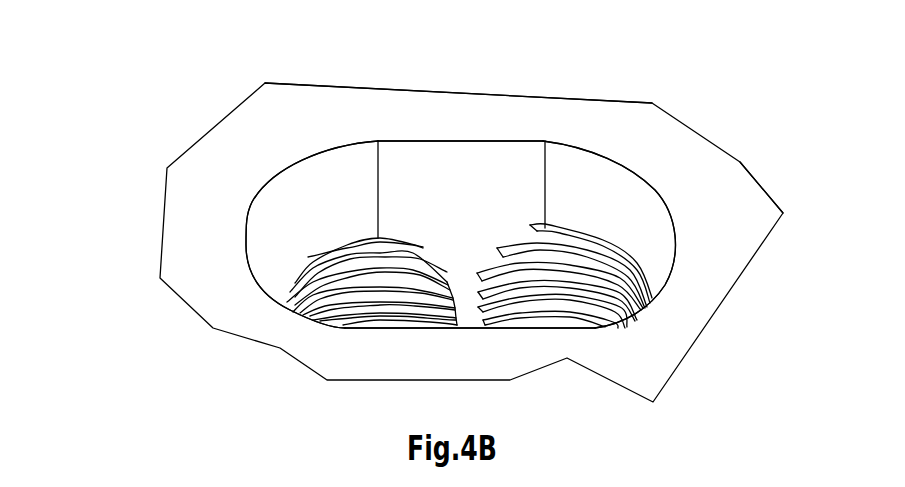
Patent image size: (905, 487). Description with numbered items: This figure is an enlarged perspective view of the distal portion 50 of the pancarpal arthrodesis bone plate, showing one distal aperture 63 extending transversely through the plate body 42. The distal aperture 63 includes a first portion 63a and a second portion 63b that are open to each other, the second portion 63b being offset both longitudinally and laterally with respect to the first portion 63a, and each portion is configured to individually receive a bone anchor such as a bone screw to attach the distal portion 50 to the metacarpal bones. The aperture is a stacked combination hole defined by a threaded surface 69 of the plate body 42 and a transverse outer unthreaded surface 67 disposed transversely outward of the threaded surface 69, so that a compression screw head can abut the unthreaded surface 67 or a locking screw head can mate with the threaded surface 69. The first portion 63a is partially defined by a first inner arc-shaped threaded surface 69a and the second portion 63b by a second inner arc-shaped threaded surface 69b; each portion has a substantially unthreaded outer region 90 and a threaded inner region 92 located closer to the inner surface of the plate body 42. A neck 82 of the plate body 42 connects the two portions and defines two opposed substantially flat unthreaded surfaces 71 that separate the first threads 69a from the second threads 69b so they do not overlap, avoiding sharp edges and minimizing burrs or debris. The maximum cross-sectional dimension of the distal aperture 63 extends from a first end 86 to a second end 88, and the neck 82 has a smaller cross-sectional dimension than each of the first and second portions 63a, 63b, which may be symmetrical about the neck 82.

The plate body 42 is at (215, 128).
The distal portion 50 is at (713, 185).
The distal aperture 63 is at (651, 179).
The first portion 63a is at (303, 310).
The second portion 63b is at (648, 280).
The transverse outer unthreaded surface 67 is at (583, 178).
The threaded surface 69 is at (318, 335).
The first inner arc-shaped threaded surface 69a is at (345, 302).
The second inner arc-shaped threaded surface 69b is at (643, 302).
The substantially flat unthreaded surface 71 is at (470, 297).
The neck 82 is at (462, 280).
The first end 86 is at (482, 141).
The second end 88 is at (512, 332).
The outer region 90 is at (537, 178).
The inner region 92 is at (350, 265).